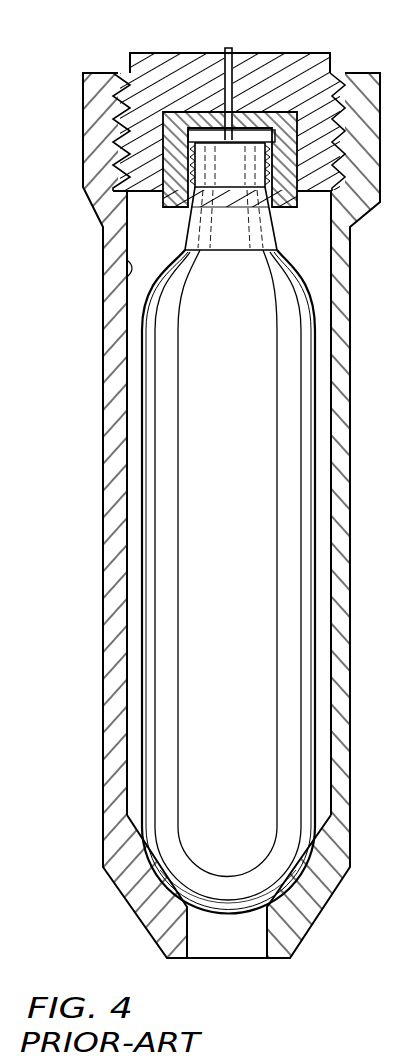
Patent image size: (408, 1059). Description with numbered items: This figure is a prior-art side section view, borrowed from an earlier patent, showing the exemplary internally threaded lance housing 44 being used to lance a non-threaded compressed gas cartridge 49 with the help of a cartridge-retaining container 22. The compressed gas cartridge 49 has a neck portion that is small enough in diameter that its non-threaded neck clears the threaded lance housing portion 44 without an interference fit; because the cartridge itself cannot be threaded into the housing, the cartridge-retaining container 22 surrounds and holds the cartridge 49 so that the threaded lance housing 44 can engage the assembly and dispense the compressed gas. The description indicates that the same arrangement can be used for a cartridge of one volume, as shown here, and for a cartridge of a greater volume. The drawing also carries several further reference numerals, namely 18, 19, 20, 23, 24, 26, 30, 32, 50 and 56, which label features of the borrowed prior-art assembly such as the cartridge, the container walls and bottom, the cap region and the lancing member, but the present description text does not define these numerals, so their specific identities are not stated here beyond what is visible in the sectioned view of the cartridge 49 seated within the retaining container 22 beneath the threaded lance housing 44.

The bottle 18 is at (140, 228).
The bottom wall of housing 19 is at (147, 905).
The container assembly 20 is at (91, 471).
The cartridge-retaining container 22 is at (113, 555).
The cap 23 is at (139, 66).
The inner surface 24 is at (128, 265).
The outer surface 26 is at (104, 406).
The housing 30 is at (112, 95).
The insert 32 is at (122, 195).
The threaded lance housing 44 is at (158, 200).
The compressed gas cartridge 49 is at (160, 653).
The bottom of bottle 50 is at (204, 912).
The needle 56 is at (230, 52).